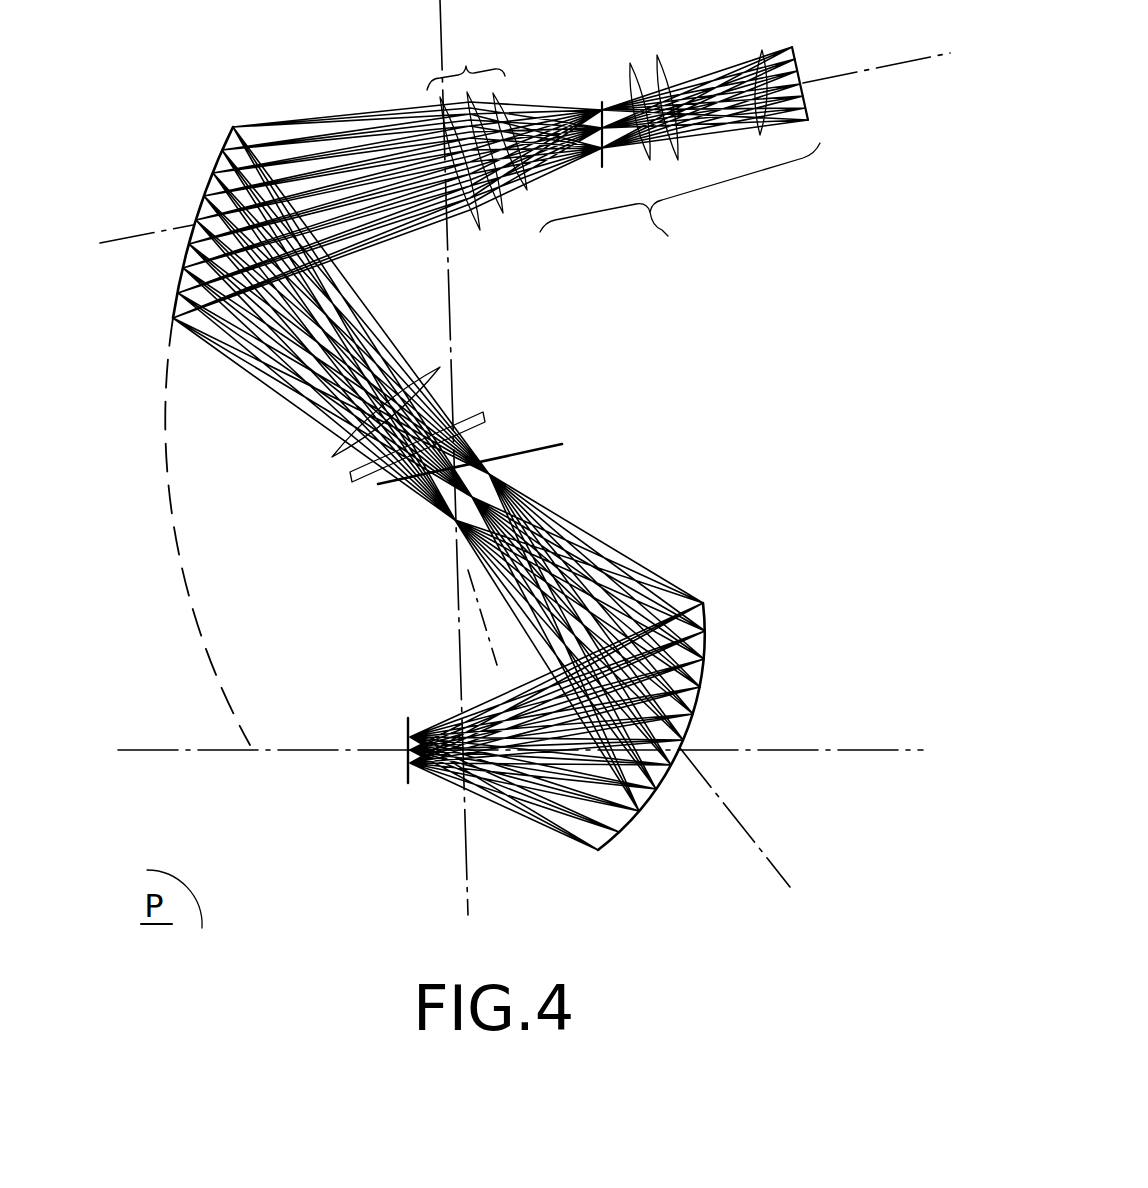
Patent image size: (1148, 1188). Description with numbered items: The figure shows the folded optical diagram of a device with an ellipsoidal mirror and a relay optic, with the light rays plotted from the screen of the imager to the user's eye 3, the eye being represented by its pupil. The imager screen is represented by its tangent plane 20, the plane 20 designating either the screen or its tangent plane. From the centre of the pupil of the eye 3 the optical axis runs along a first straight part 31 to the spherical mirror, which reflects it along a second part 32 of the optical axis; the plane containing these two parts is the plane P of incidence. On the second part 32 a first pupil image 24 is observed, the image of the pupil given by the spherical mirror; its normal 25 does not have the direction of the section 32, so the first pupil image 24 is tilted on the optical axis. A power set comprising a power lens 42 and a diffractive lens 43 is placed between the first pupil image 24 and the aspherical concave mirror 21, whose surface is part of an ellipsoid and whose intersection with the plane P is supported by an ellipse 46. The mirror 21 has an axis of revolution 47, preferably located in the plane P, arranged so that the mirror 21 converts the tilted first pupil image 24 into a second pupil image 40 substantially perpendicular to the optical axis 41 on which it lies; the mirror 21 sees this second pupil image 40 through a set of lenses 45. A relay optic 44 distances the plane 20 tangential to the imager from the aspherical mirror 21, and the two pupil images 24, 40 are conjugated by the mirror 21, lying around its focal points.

The user's eye 3 is at (407, 730).
The tangent plane 20 is at (793, 53).
The aspherical concave mirror 21 is at (228, 135).
The first pupil image 24 is at (557, 445).
The normal 25 is at (480, 602).
The first part of the optical axis 31 is at (797, 744).
The second part of the optical axis 32 is at (790, 873).
The second pupil image 40 is at (598, 102).
The optical axis 41 is at (918, 50).
The power lens 42 is at (330, 443).
The diffractive lens 43 is at (350, 473).
The relay optic 44 is at (680, 154).
The set of lenses 45 is at (466, 66).
The ellipse 46 is at (217, 687).
The axis of revolution 47 is at (447, 285).